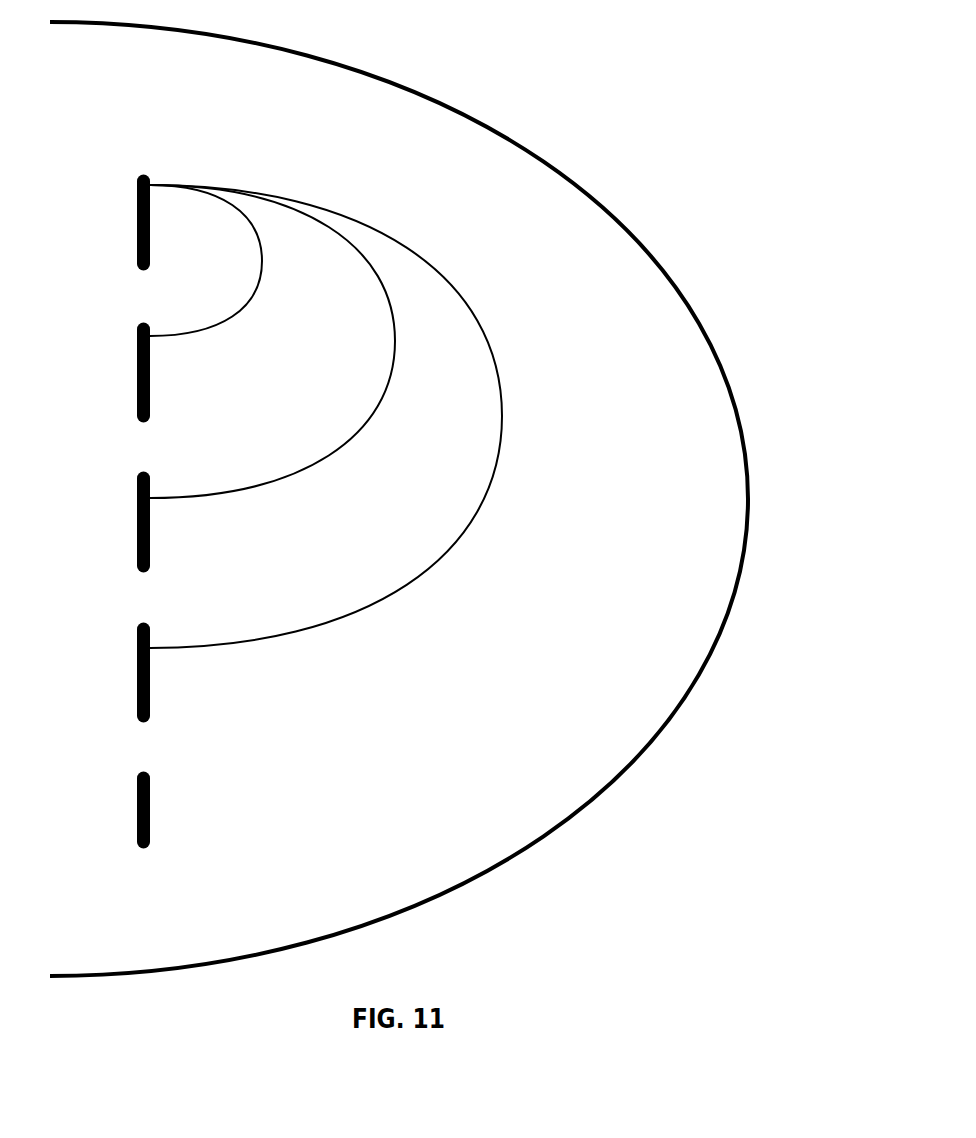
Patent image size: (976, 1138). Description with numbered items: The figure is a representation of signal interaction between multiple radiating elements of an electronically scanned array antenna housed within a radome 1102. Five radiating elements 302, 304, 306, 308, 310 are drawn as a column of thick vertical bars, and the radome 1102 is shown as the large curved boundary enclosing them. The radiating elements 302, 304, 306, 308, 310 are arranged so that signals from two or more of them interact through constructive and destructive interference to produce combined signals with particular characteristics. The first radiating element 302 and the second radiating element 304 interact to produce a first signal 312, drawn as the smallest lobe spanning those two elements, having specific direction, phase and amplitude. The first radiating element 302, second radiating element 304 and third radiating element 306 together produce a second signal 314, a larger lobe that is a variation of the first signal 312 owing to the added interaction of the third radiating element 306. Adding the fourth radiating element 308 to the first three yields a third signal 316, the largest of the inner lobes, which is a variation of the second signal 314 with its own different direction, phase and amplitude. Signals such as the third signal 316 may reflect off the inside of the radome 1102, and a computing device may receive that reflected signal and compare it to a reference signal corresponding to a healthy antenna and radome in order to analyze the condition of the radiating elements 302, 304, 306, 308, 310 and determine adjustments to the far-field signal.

The radome 1102 is at (495, 127).
The first radiating element 302 is at (141, 175).
The second radiating element 304 is at (137, 367).
The third radiating element 306 is at (137, 484).
The fourth radiating element 308 is at (137, 660).
The radiating element 310 is at (137, 785).
The first signal 312 is at (212, 323).
The second signal 314 is at (372, 403).
The third signal 316 is at (437, 288).